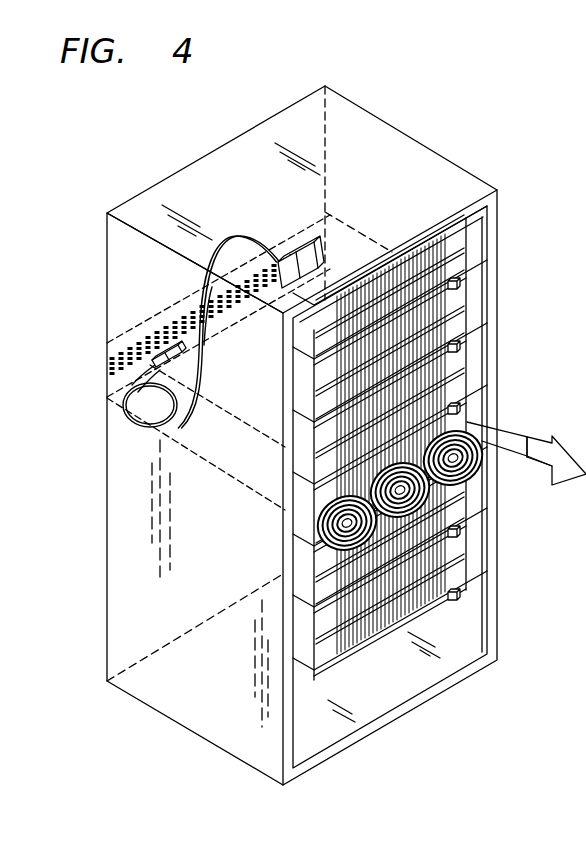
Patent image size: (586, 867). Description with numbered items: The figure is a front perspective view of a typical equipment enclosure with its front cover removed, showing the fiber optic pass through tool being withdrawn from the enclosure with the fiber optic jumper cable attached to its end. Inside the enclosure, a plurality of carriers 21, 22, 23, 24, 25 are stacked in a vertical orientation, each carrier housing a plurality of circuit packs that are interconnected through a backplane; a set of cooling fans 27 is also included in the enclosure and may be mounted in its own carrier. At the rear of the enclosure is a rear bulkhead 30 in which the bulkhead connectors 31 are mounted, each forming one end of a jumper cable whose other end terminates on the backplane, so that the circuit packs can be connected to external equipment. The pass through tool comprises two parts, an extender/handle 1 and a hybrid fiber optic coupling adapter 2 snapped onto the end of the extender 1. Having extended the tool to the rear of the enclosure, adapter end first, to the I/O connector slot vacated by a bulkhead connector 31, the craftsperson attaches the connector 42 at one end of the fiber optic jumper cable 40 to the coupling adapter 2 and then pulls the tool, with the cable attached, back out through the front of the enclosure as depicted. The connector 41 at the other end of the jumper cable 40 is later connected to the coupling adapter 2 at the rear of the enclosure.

The extender/handle 1 is at (380, 253).
The hybrid fiber optic coupling adapter 2 is at (330, 268).
The carrier 21 is at (483, 253).
The carrier 22 is at (483, 318).
The carrier 23 is at (483, 378).
The carrier 24 is at (481, 500).
The carrier 25 is at (481, 565).
The fan unit 27 is at (468, 423).
The rear bulkhead 30 is at (130, 342).
The bulkhead connector 31 is at (212, 287).
The cable 40 is at (233, 235).
The connector 41 is at (165, 345).
The connector 42 is at (307, 255).